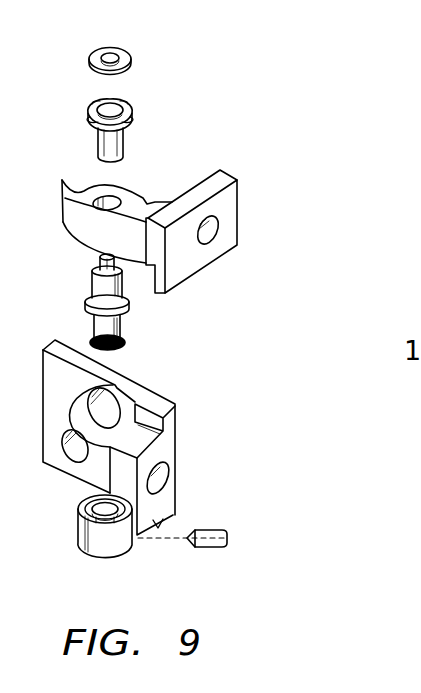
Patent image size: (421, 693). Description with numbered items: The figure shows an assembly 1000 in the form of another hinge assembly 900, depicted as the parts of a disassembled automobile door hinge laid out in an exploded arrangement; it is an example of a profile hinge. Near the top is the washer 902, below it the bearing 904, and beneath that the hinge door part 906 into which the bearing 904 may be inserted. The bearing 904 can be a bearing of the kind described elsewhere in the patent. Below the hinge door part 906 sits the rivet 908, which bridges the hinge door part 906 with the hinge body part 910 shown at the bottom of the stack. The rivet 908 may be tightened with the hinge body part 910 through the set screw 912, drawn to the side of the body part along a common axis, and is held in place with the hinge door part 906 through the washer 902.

The hinge assembly 900 is at (296, 237).
The washer 902 is at (132, 63).
The bearing 904 is at (124, 148).
The hinge door part 906 is at (238, 193).
The rivet 908 is at (123, 330).
The hinge body part 910 is at (176, 430).
The set screw 912 is at (228, 533).
The hinge system 1000 is at (313, 127).